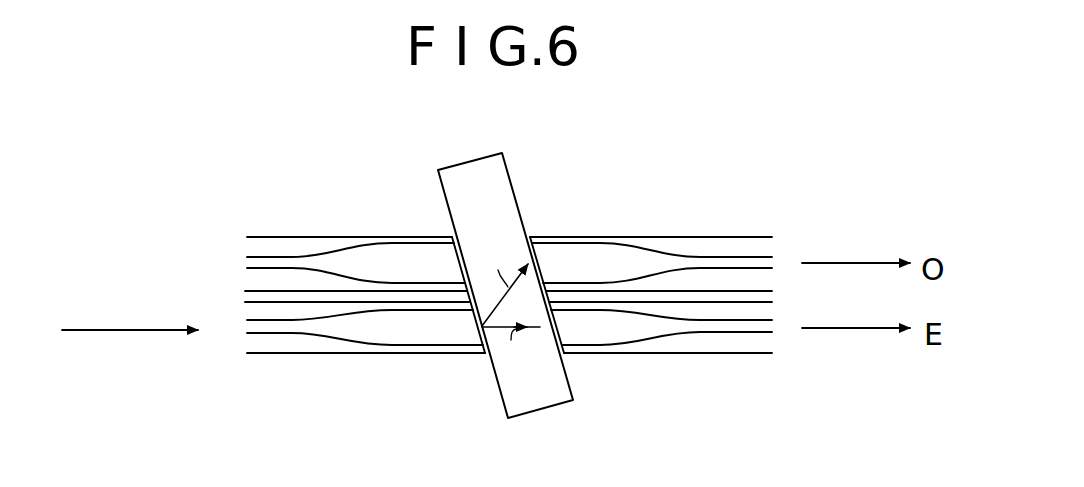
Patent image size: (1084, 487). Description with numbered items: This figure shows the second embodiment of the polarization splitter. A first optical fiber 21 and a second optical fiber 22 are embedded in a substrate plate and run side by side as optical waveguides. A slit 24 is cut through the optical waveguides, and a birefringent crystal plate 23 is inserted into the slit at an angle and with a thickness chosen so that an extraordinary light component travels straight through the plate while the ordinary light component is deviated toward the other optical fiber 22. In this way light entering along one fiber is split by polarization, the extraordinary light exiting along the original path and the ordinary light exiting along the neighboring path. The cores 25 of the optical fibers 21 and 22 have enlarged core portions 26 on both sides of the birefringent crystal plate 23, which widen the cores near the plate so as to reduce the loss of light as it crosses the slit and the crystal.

The first optical fiber 21 is at (698, 355).
The second optical fiber 22 is at (657, 237).
The birefringent crystal plate 23 is at (463, 175).
The slit 24 is at (365, 320).
The cores 25 is at (254, 258).
The enlarged core portions 26 is at (365, 253).